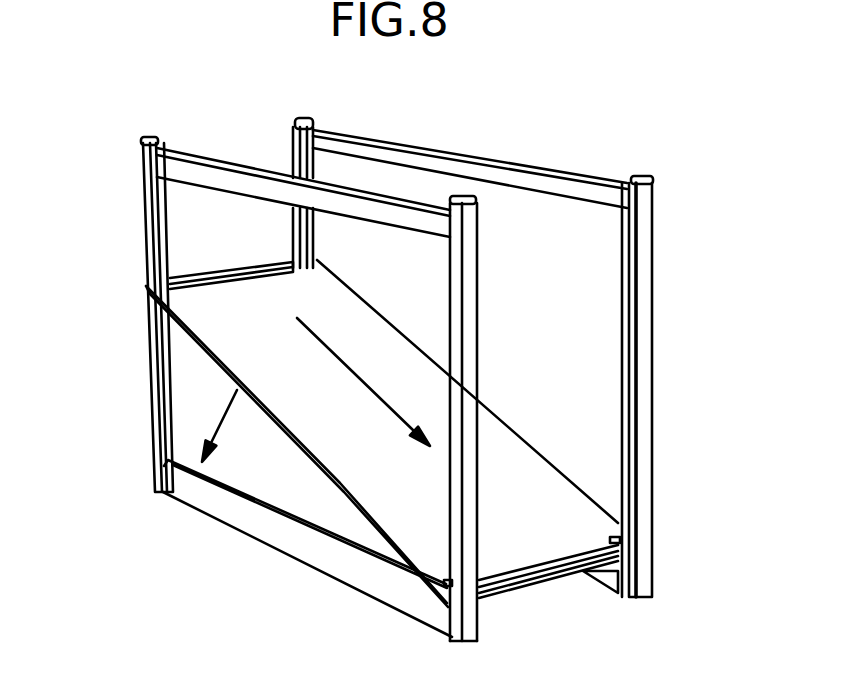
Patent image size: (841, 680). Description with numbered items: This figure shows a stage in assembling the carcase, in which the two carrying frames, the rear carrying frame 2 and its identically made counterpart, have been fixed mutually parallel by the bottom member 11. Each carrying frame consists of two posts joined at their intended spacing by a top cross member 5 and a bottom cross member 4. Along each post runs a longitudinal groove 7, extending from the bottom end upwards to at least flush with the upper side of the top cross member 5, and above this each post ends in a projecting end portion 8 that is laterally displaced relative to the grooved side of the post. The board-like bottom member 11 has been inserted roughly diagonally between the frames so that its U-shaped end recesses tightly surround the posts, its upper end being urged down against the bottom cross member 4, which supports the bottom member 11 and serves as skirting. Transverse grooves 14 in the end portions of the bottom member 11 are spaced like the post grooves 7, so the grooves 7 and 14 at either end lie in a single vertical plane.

The rear carrying frame 2 is at (668, 524).
The bottom cross member 4 is at (248, 518).
The top cross member 5 is at (414, 217).
The longitudinal groove 7 is at (633, 215).
The projecting end portion 8 is at (142, 146).
The bottom member 11 is at (370, 483).
The transverse groove 14 is at (237, 268).